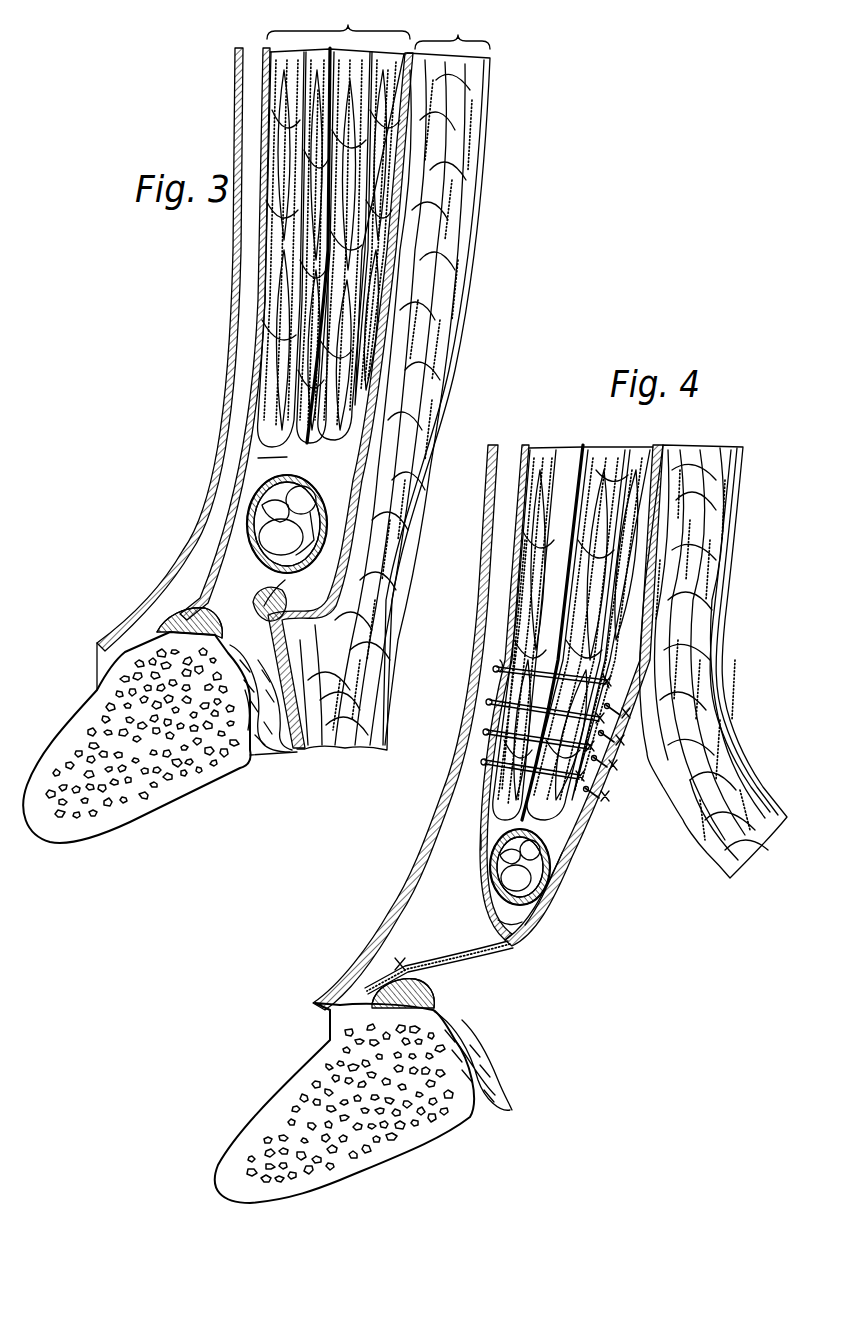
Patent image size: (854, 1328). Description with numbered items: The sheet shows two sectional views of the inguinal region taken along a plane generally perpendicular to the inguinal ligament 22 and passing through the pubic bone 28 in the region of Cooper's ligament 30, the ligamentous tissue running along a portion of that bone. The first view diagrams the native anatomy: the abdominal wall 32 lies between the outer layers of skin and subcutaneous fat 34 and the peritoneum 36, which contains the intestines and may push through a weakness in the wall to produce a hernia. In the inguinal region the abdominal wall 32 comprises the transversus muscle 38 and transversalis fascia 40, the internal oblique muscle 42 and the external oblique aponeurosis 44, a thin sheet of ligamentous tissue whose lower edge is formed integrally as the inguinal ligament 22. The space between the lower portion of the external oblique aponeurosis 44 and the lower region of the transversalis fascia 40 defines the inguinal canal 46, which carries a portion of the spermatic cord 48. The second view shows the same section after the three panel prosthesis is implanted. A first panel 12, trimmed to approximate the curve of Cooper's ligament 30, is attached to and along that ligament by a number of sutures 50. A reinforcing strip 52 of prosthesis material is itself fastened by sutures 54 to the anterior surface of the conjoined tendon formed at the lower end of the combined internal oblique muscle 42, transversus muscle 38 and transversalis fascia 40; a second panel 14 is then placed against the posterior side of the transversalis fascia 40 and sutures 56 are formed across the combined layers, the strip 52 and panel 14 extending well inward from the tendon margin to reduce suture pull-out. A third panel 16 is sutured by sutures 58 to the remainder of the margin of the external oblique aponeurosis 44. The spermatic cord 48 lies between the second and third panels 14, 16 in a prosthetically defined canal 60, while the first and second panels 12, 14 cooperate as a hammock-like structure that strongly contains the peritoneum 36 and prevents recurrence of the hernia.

In FIG. 4, the first panel 12 is at (420, 967).
In FIG. 4, the second panel 14 is at (478, 841).
In FIG. 4, the third panel 16 is at (567, 853).
In FIG. 3, the inguinal ligament 22 is at (277, 610).
In FIG. 3, the pubic bone 28 is at (90, 690).
In FIG. 4, the pubic bone 28 is at (283, 1073).
In FIG. 3, the Cooper's ligament 30 is at (213, 600).
In FIG. 4, the Cooper's ligament 30 is at (430, 997).
In FIG. 3, the abdominal wall 32 is at (338, 222).
In FIG. 3, the skin and subcutaneous fat 34 is at (393, 376).
In FIG. 4, the skin and subcutaneous fat 34 is at (713, 462).
In FIG. 3, the peritoneum 36 is at (237, 108).
In FIG. 4, the peritoneum 36 is at (447, 774).
In FIG. 3, the transversus muscle 38 is at (297, 88).
In FIG. 4, the transversus muscle 38 is at (578, 452).
In FIG. 3, the transversalis fascia 40 is at (266, 50).
In FIG. 4, the transversalis fascia 40 is at (523, 445).
In FIG. 3, the internal oblique muscle 42 is at (380, 102).
In FIG. 4, the internal oblique muscle 42 is at (625, 456).
In FIG. 3, the external oblique aponeurosis 44 is at (413, 73).
In FIG. 4, the external oblique aponeurosis 44 is at (597, 817).
In FIG. 3, the inguinal canal 46 is at (287, 457).
In FIG. 3, the spermatic cord 48 is at (263, 485).
In FIG. 4, the spermatic cord 48 is at (495, 840).
In FIG. 4, the sutures 50 is at (398, 965).
In FIG. 4, the reinforcing strip 52 is at (607, 677).
In FIG. 4, the sutures 54 is at (490, 753).
In FIG. 4, the sutures 56 is at (520, 653).
In FIG. 4, the sutures 58 is at (610, 793).
In FIG. 4, the prosthetically defined canal 60 is at (510, 913).